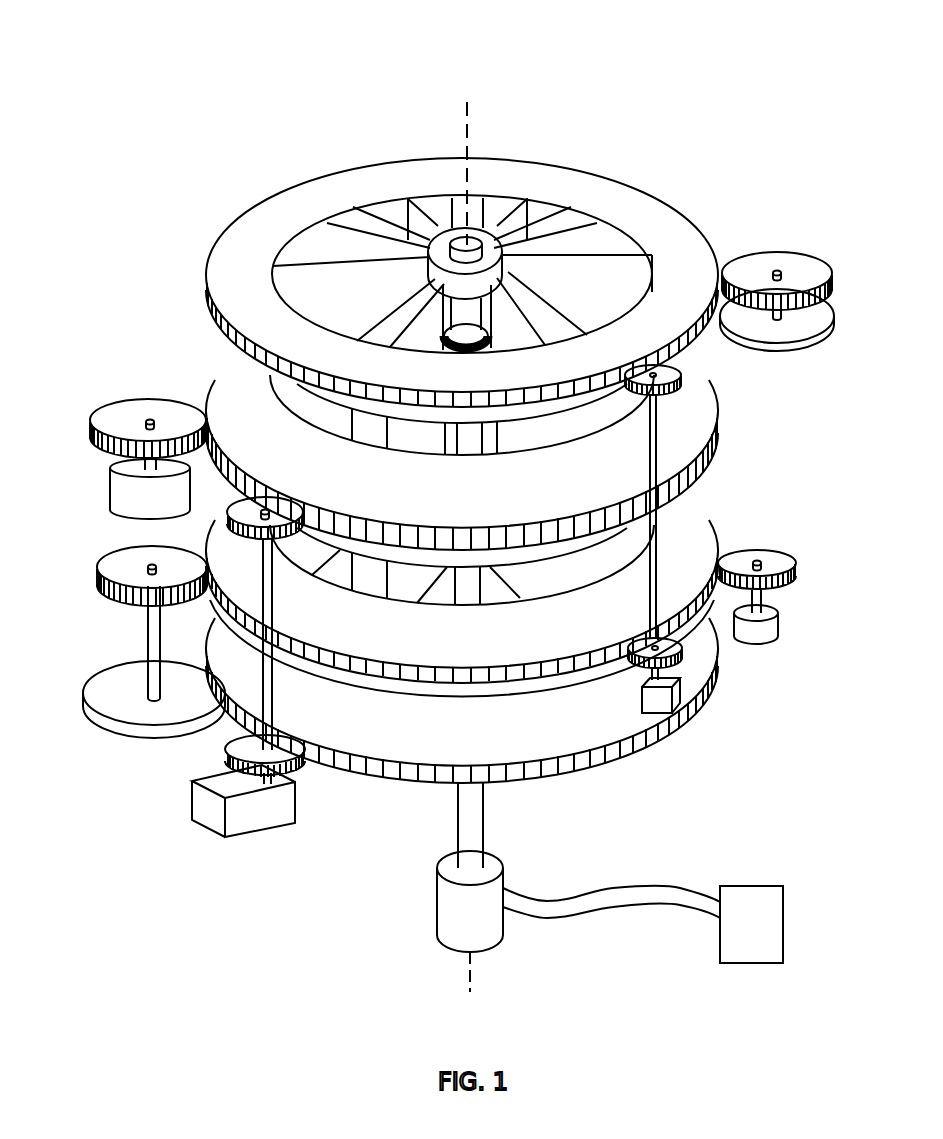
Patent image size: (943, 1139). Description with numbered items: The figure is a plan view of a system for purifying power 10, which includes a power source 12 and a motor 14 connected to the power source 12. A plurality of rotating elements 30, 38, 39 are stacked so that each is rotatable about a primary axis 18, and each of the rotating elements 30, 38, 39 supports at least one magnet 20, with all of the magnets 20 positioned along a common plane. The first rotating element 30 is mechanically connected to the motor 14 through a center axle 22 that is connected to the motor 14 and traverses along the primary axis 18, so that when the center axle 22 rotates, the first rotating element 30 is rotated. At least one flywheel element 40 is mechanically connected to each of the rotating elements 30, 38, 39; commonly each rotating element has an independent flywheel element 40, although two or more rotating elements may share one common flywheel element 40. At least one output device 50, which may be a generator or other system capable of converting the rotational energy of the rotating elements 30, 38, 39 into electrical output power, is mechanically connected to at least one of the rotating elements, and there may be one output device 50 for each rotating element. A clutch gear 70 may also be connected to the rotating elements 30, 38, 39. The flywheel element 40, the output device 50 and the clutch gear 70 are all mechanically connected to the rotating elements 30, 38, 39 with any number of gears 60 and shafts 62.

The system for purifying power 10 is at (621, 72).
The power source 12 is at (751, 924).
The motor 14 is at (470, 921).
The primary axis 18 is at (472, 122).
The magnet 20 is at (440, 217).
The center axle 22 is at (470, 237).
The first rotating element 30 is at (488, 498).
The rotating element 38 is at (488, 389).
The rotating element 39 is at (496, 643).
The flywheel element 40 is at (496, 748).
The output device 50 is at (125, 492).
The gear 60 is at (118, 415).
The shaft 62 is at (148, 418).
The clutch gear 70 is at (210, 806).